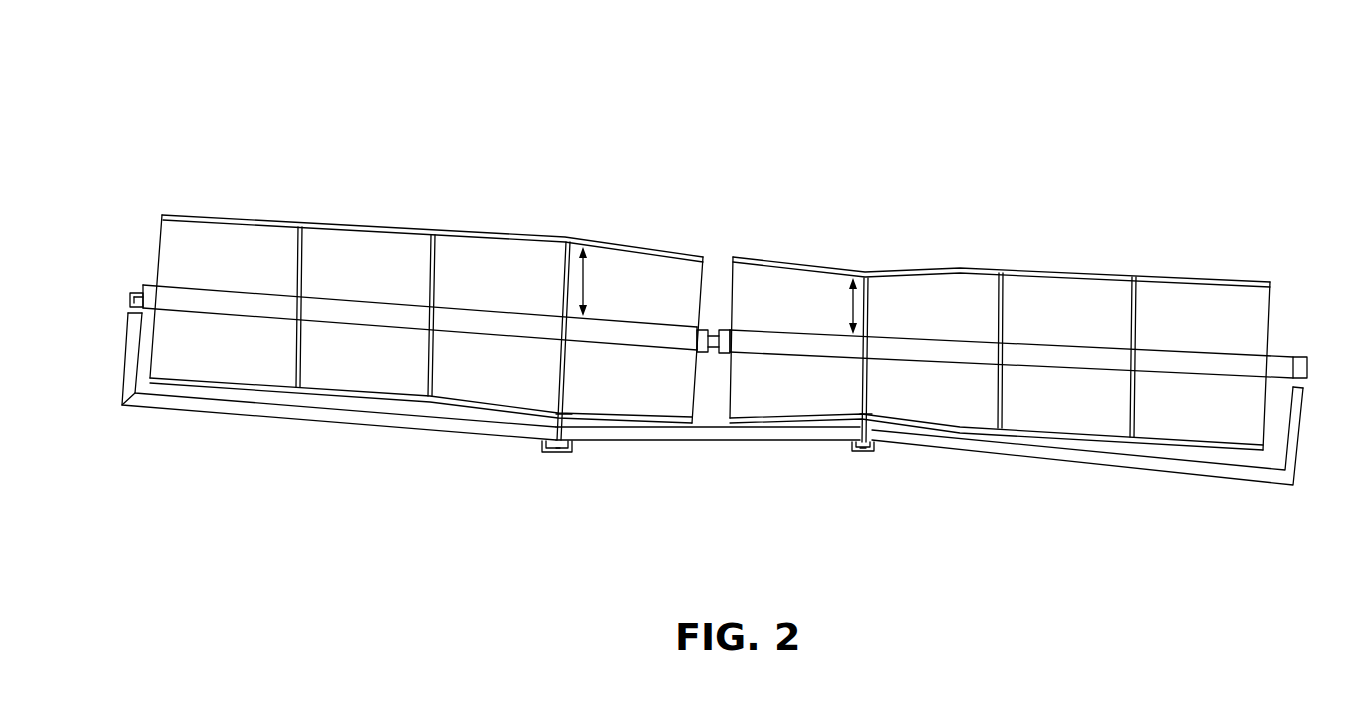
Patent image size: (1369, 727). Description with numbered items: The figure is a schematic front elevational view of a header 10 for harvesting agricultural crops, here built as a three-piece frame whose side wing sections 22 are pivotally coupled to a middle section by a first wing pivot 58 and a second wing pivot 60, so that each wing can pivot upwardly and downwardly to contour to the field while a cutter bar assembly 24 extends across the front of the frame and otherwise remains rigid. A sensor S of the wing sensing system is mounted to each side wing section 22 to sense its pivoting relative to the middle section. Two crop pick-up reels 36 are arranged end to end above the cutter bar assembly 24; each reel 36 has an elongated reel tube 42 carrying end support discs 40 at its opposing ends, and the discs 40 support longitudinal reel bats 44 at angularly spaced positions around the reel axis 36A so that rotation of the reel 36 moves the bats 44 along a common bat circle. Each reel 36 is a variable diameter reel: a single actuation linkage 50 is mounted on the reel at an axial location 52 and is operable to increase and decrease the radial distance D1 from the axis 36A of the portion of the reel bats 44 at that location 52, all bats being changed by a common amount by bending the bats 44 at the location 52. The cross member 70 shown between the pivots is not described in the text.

The header 10 is at (1127, 116).
The side wing section 22 is at (333, 421).
The cutter bar assembly 24 is at (192, 412).
The crop pick-up reel 36 is at (410, 214).
The reel axis 36A is at (1308, 366).
The end support disc 40 is at (158, 253).
The reel tube 42 is at (226, 290).
The reel bat 44 is at (1072, 259).
The actuation linkage 50 is at (570, 235).
The axial location 52 is at (563, 417).
The first wing pivot 58 is at (574, 445).
The second wing pivot 60 is at (878, 440).
The cross member 70 is at (712, 441).
The radial distance D1 is at (585, 281).
The sensor S is at (546, 447).